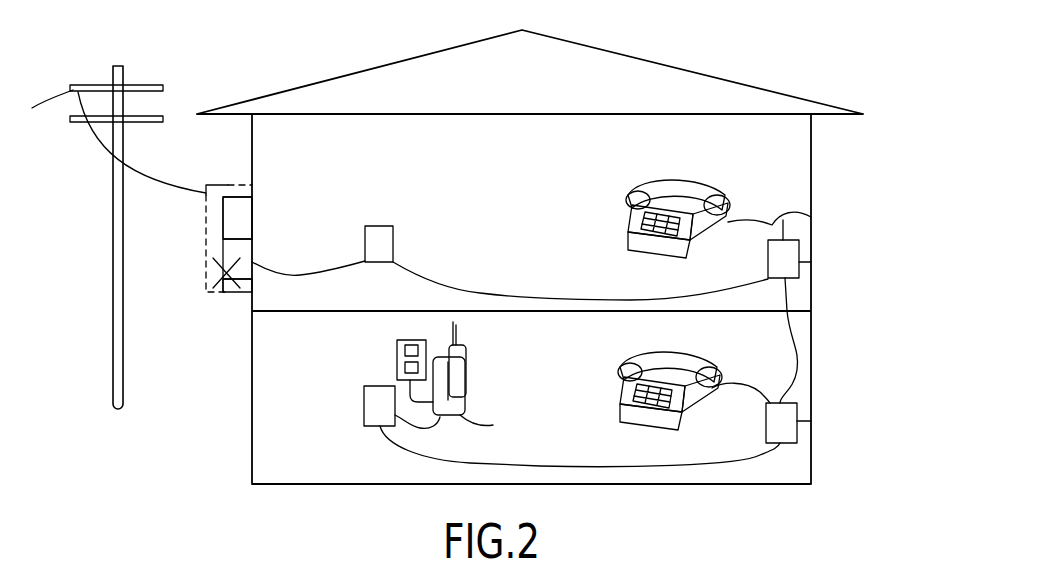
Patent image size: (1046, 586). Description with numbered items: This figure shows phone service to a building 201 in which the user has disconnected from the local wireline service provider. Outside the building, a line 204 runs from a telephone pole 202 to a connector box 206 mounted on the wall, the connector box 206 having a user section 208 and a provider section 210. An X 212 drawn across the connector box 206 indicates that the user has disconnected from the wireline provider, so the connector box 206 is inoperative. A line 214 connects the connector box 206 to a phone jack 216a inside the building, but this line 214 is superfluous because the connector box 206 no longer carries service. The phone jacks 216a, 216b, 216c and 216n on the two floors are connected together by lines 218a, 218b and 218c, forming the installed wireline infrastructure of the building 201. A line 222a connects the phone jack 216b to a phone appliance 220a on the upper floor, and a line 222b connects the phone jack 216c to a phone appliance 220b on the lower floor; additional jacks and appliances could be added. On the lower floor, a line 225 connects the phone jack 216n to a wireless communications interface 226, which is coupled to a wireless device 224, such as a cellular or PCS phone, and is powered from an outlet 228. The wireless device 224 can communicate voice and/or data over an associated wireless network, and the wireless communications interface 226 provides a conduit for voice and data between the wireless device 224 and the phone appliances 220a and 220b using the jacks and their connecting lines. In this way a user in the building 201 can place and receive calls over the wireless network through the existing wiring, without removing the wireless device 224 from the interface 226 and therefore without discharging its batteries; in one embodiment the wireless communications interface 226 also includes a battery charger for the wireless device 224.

The building 201 is at (715, 77).
The telephone pole 202 is at (120, 66).
The line 204 is at (147, 190).
The connector box 206 is at (221, 184).
The user section 208 is at (252, 208).
The provider section 210 is at (252, 283).
The X 212 is at (232, 293).
The line 214 is at (315, 275).
The phone jack 216a is at (392, 226).
The phone jack 216b is at (811, 262).
The phone jack 216c is at (811, 421).
The phone jack 216n is at (364, 408).
The line 218a is at (520, 298).
The line 218b is at (811, 334).
The line 218c is at (591, 464).
The phone appliance 220a is at (685, 178).
The phone appliance 220b is at (640, 352).
The line 222a is at (811, 217).
The line 222b is at (742, 383).
The wireless device 224 is at (466, 367).
The line 225 is at (420, 428).
The wireless communications interface 226 is at (498, 424).
The outlet 228 is at (397, 345).